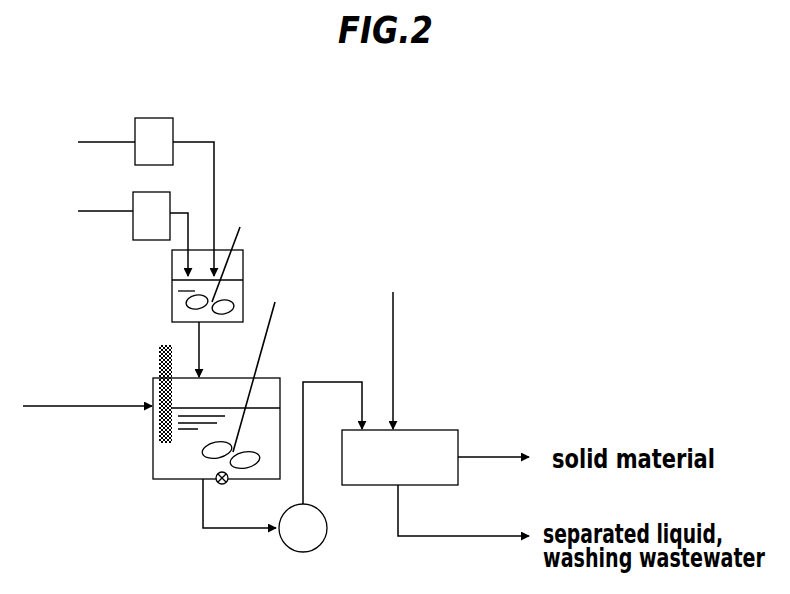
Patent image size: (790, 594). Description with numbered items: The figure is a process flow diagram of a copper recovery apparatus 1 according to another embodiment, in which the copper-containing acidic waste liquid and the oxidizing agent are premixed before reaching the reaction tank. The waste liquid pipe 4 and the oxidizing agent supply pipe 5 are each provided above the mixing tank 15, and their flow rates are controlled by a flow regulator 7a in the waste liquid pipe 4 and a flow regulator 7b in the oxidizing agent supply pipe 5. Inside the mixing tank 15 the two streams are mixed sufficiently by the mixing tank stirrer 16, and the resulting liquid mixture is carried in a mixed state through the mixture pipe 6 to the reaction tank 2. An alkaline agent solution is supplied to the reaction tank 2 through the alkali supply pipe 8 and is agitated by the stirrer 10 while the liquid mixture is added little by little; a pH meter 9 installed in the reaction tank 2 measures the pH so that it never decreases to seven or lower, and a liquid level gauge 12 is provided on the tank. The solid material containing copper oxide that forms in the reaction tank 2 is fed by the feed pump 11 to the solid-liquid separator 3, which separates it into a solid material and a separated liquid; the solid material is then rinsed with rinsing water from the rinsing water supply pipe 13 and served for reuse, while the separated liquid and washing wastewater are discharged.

The copper recovery apparatus 1 is at (393, 563).
The reaction tank 2 is at (153, 458).
The solid-liquid separator 3 is at (423, 455).
The waste liquid pipe 4 is at (113, 212).
The oxidizing agent supply pipe 5 is at (215, 197).
The mixture pipe 6 is at (199, 347).
The flow regulator 7a is at (135, 203).
The flow regulator 7b is at (135, 130).
The alkali supply pipe 8 is at (88, 405).
The pH meter 9 is at (160, 350).
The stirrer 10 is at (268, 340).
The feed pump 11 is at (322, 522).
The liquid level gauge 12 is at (225, 483).
The rinsing water supply pipe 13 is at (393, 347).
The mixing tank 15 is at (230, 293).
The mixing tank stirrer 16 is at (240, 240).